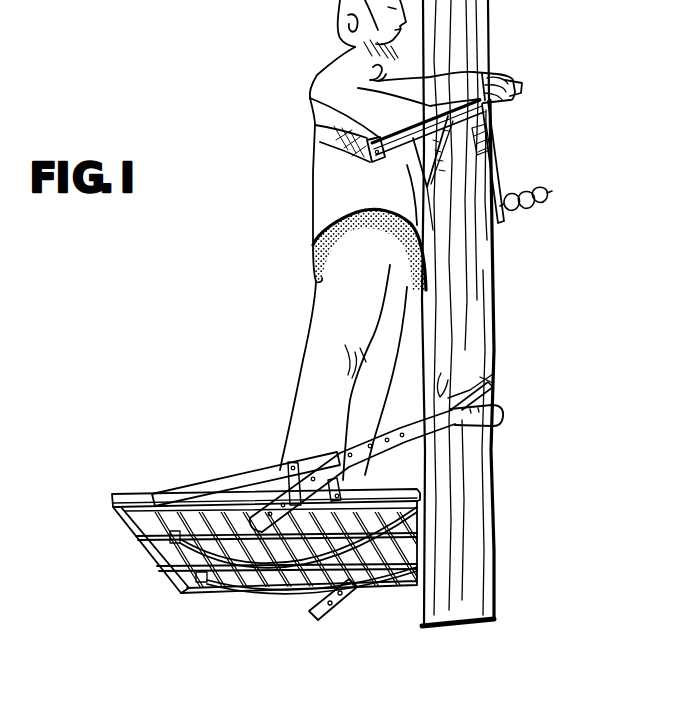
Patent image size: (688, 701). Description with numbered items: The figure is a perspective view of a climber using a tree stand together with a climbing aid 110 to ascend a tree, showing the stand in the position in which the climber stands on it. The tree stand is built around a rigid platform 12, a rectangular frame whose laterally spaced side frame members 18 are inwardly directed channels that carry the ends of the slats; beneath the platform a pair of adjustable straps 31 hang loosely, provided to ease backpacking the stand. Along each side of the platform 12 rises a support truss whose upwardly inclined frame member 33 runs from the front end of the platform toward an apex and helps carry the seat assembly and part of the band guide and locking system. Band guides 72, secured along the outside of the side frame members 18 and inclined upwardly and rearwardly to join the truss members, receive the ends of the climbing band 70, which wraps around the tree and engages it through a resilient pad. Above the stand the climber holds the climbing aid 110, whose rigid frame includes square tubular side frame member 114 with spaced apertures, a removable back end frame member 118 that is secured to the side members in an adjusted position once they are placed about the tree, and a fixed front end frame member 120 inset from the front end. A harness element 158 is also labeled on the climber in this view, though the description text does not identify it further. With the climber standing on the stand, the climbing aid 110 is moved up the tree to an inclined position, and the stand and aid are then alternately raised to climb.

The platform 12 is at (271, 551).
The side frame members 18 is at (182, 497).
The straps 31 is at (235, 556).
The upwardly inclined frame member 33 is at (247, 472).
The climbing band 70 is at (490, 386).
The band guides 72 is at (330, 460).
The climbing aid 110 is at (518, 173).
The side frame member 114 is at (463, 117).
The back end frame member 118 is at (510, 184).
The front end frame member 120 is at (413, 178).
The safety harness 158 is at (310, 99).